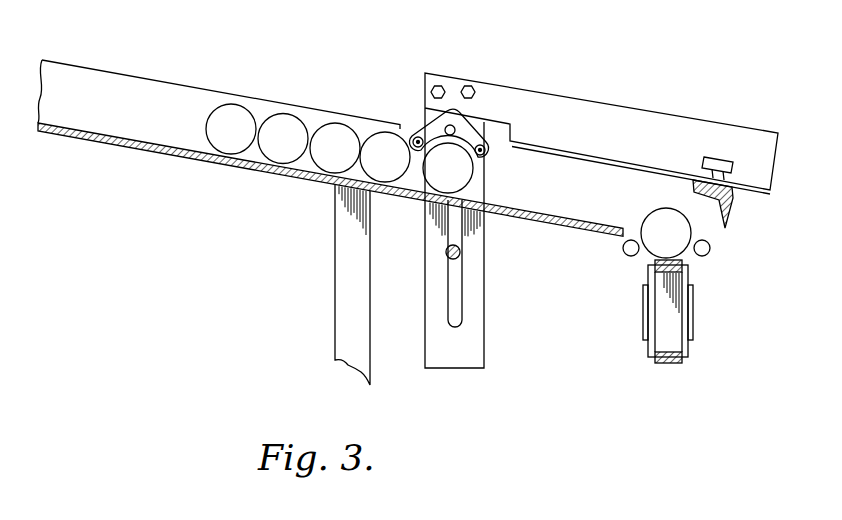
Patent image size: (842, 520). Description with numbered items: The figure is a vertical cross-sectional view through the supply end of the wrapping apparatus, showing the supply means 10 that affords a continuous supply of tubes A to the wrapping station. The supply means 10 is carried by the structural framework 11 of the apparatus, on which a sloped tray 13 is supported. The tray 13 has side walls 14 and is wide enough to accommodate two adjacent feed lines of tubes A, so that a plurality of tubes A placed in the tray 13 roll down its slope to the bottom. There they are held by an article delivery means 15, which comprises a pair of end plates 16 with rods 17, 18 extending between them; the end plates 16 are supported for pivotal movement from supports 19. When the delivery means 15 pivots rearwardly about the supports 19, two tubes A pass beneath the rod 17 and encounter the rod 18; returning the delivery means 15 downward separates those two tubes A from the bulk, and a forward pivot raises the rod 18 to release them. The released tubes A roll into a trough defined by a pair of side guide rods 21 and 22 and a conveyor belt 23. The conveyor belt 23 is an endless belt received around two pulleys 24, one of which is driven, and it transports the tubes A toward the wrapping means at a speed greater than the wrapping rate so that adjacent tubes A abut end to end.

The supply means 10 is at (232, 205).
The structural framework 11 is at (338, 311).
The sloped tray 13 is at (138, 142).
The side walls 14 is at (130, 85).
The article delivery means 15 is at (490, 57).
The end plates 16 is at (465, 132).
The rod 17 is at (415, 137).
The rod 18 is at (486, 152).
The supports 19 is at (483, 315).
The side guide rod 21 is at (624, 252).
The side guide rod 22 is at (710, 247).
The conveyor belt 23 is at (690, 263).
The pulleys 24 is at (692, 308).
The tubes A is at (233, 113).